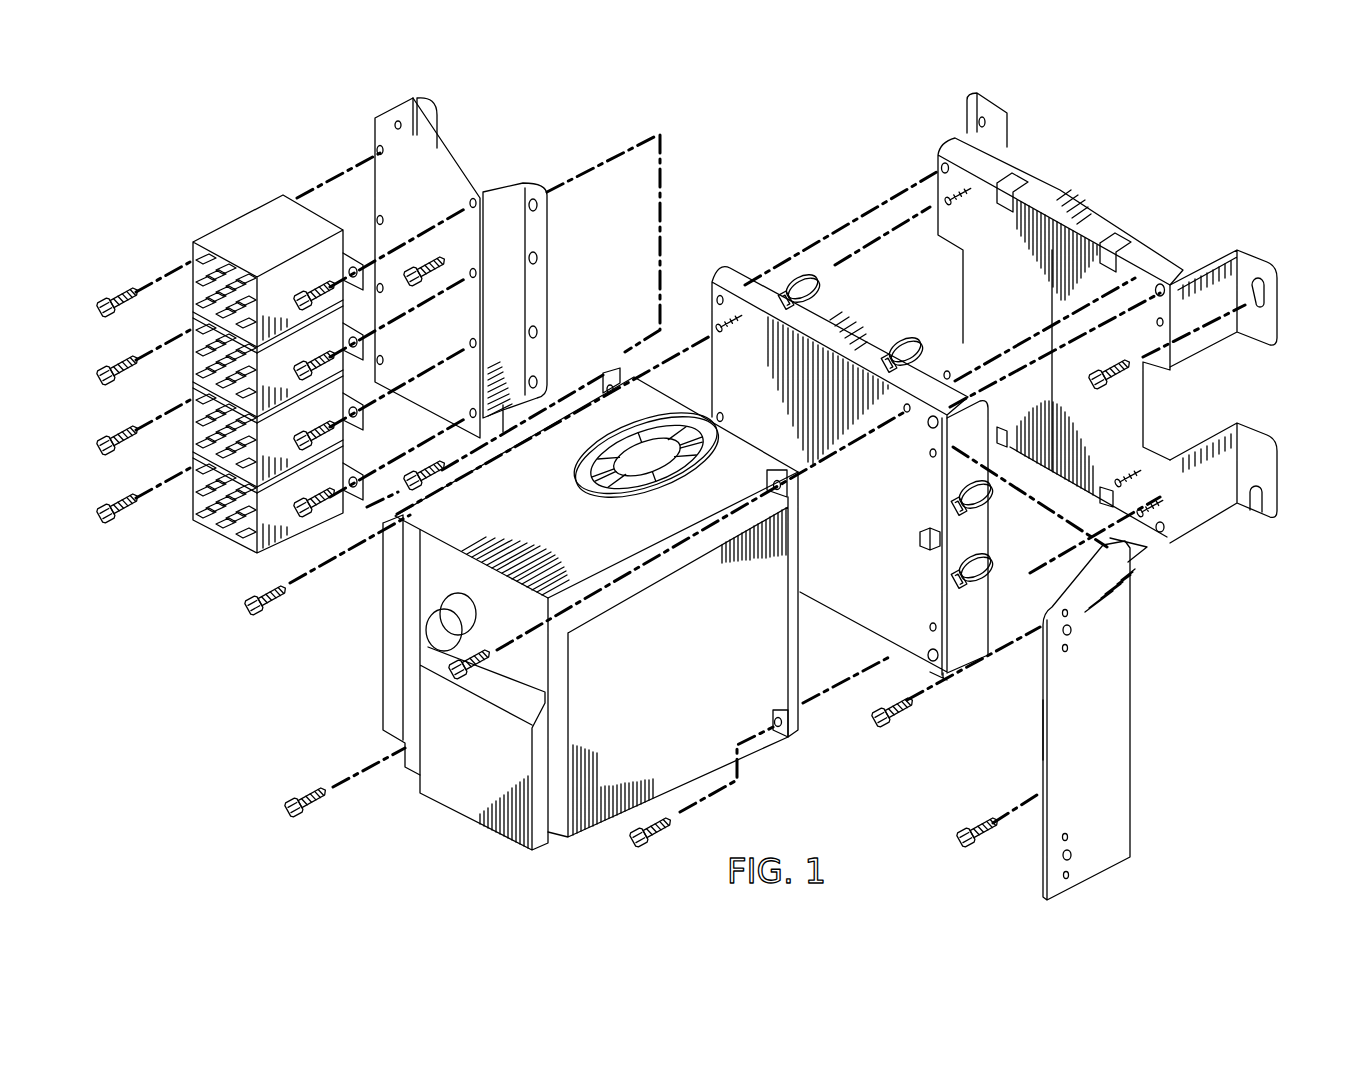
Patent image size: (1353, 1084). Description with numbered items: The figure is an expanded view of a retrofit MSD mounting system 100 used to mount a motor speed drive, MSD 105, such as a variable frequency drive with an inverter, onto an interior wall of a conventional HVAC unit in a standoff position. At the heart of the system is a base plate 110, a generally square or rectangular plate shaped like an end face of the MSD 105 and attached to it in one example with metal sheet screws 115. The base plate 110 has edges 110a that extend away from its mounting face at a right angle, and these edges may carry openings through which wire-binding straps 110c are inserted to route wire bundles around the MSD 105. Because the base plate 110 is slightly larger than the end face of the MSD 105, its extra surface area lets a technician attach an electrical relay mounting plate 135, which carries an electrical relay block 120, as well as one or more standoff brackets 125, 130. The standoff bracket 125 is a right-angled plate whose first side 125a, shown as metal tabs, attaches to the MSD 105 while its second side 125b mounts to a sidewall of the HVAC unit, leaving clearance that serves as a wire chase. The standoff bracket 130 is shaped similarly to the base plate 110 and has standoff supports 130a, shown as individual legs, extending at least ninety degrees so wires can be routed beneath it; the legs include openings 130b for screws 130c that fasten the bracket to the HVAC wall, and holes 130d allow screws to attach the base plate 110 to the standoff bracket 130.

The retrofit MSD mounting system 100 is at (256, 764).
The MSD 105 is at (376, 628).
The base plate 110 is at (892, 465).
The edges 110a is at (950, 664).
The wire-binding straps 110c is at (1013, 562).
The metal sheet screws 115 is at (270, 607).
The electrical relay block 120 is at (237, 211).
The standoff bracket 125 is at (1095, 719).
The first side 125a is at (1141, 548).
The second side 125b is at (1046, 755).
The standoff bracket 130 is at (1101, 326).
The standoff supports 130a is at (972, 120).
The openings 130b is at (1261, 276).
The screws 130c is at (1097, 392).
The holes 130d is at (1161, 283).
The electrical relay mounting plate 135 is at (466, 163).